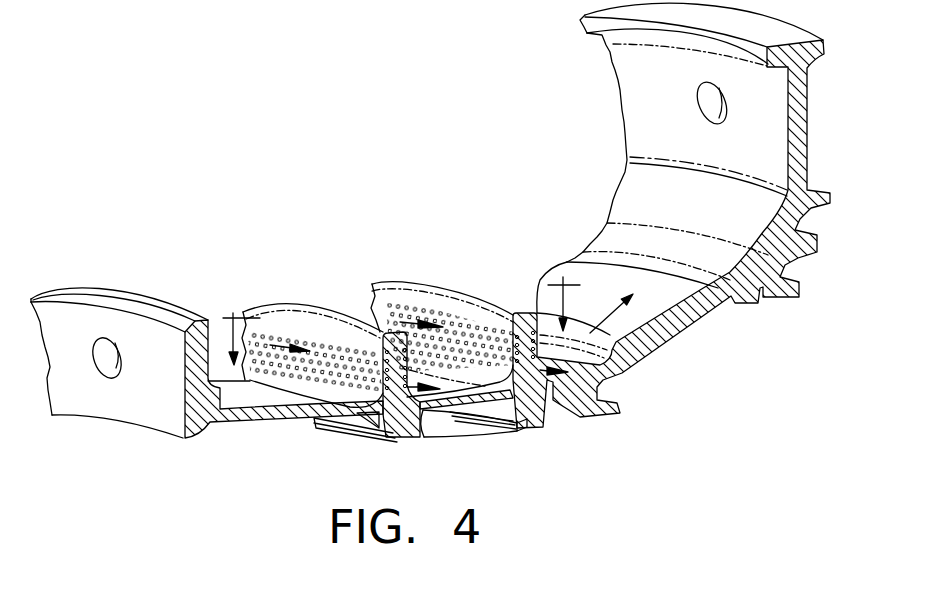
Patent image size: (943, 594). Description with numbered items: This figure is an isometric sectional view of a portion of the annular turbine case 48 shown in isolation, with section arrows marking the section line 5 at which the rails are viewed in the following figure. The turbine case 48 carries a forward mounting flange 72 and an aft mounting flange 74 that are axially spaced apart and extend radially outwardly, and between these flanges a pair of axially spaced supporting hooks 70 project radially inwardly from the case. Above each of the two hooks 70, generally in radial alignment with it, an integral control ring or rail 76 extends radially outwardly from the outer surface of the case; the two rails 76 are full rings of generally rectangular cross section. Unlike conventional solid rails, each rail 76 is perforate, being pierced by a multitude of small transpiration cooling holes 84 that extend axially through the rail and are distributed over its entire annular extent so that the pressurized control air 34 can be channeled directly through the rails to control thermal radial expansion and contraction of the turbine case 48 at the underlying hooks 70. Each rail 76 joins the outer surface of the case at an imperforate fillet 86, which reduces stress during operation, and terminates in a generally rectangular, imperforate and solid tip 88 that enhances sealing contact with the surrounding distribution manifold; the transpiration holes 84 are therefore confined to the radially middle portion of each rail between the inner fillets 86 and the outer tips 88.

The forward mounting flange 72 is at (163, 403).
The aft mounting flange 74 is at (630, 82).
The turbine case 48 is at (540, 257).
The tips 88 is at (545, 305).
The pressurized control air 34 is at (275, 340).
The control rings or rails 76 is at (372, 301).
The transpiration cooling holes 84 is at (423, 311).
The imperforate fillets 86 is at (355, 404).
The supporting hooks 70 is at (507, 431).
The section line 5- 5 is at (399, 326).